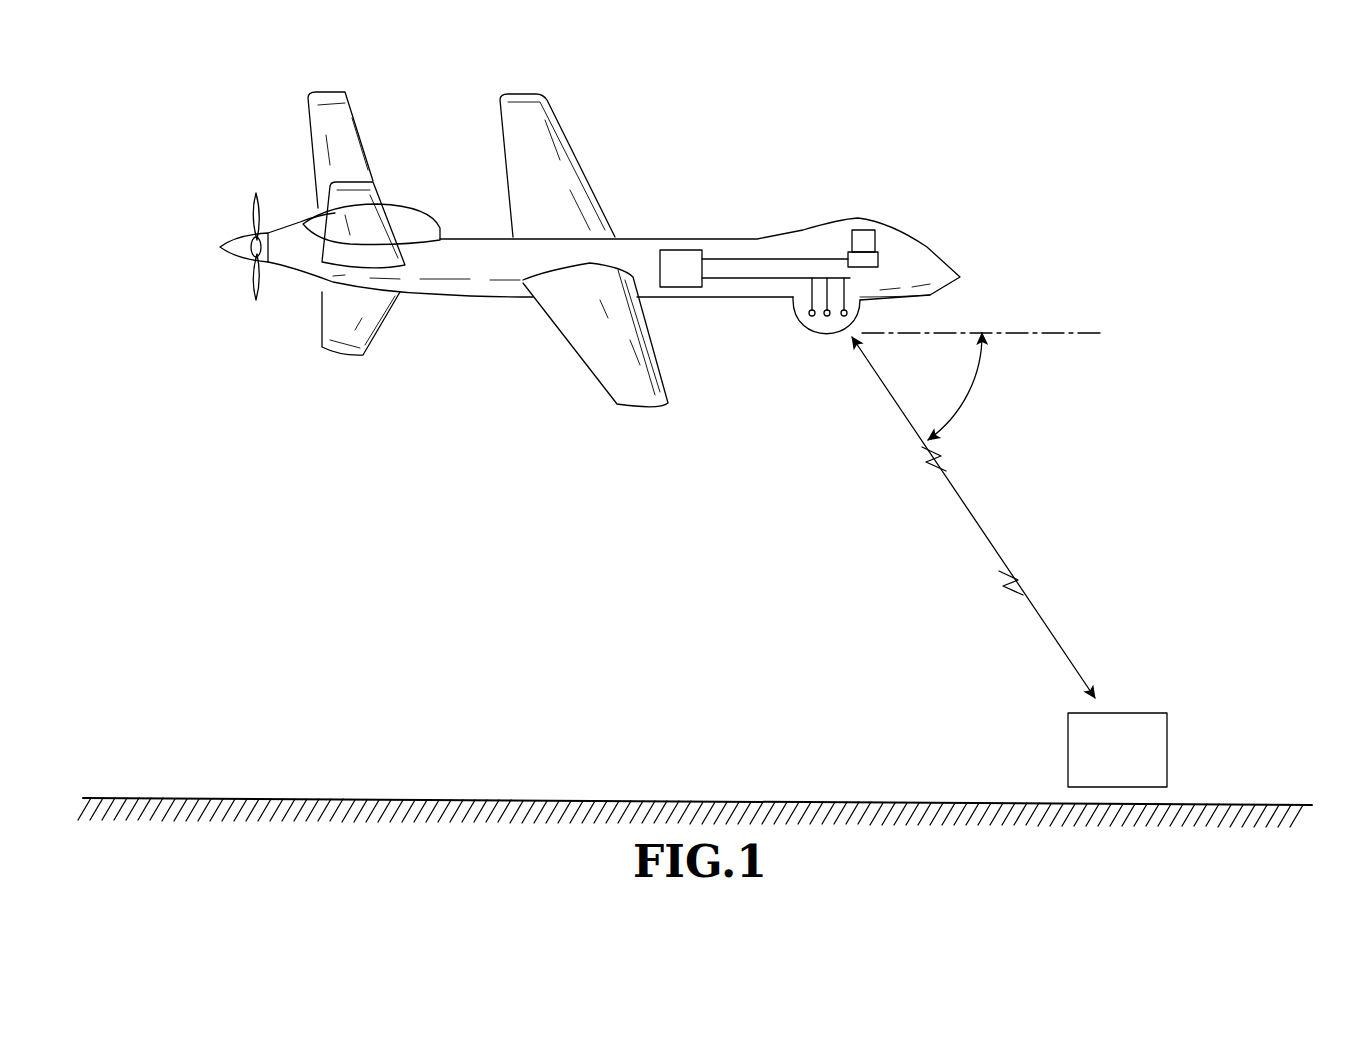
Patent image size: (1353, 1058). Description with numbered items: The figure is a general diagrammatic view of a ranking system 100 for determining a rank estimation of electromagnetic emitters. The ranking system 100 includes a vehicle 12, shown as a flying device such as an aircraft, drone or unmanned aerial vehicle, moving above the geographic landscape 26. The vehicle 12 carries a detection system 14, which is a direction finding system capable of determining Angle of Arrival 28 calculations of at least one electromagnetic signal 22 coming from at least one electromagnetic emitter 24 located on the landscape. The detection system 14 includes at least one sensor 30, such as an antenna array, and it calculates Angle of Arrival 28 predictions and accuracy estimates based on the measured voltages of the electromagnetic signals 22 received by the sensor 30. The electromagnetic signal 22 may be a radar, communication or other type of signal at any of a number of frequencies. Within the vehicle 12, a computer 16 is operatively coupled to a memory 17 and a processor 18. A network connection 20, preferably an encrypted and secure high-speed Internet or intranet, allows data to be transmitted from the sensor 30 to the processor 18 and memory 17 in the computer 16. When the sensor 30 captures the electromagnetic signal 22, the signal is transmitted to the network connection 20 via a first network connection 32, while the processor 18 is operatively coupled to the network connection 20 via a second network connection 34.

The ranking system 100 is at (1048, 188).
The vehicle 12 is at (791, 232).
The detection system 14 is at (815, 334).
The computer 16 is at (899, 207).
The memory 17 is at (878, 240).
The processor 18 is at (880, 259).
The network connection 20 is at (679, 249).
The electromagnetic signal 22 is at (980, 531).
The electromagnetic emitter 24 is at (1168, 749).
The geographic landscape 26 is at (565, 799).
The Angle of Arrival 28 is at (968, 395).
The sensor 30 is at (804, 314).
The first network connection 32 is at (736, 279).
The second network connection 34 is at (736, 258).